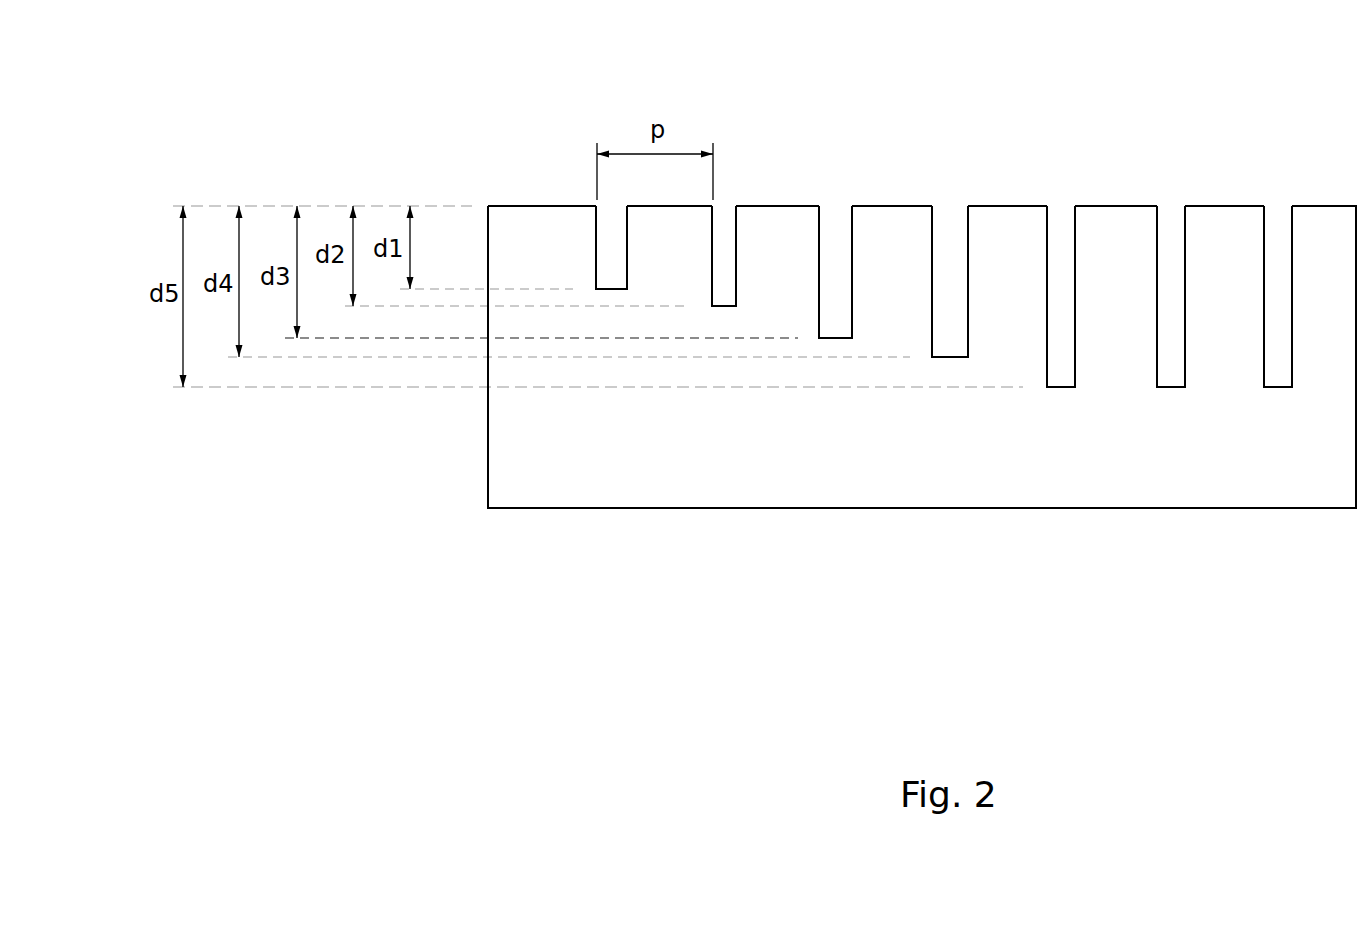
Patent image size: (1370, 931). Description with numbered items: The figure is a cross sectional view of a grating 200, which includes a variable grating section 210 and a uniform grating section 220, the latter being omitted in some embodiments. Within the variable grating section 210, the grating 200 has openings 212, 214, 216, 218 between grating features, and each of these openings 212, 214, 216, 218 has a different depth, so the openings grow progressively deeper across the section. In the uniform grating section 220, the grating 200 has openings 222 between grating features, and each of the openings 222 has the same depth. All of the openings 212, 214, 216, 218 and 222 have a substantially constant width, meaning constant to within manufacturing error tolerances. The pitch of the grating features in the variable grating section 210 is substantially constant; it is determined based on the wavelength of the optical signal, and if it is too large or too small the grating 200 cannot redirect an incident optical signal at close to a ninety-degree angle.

The grating 200 is at (346, 100).
The variable grating section 210 is at (1047, 627).
The opening 212 is at (597, 224).
The opening 214 is at (722, 222).
The opening 216 is at (837, 222).
The opening 218 is at (948, 222).
The uniform grating section 220 is at (1355, 627).
The openings 222 is at (1278, 230).